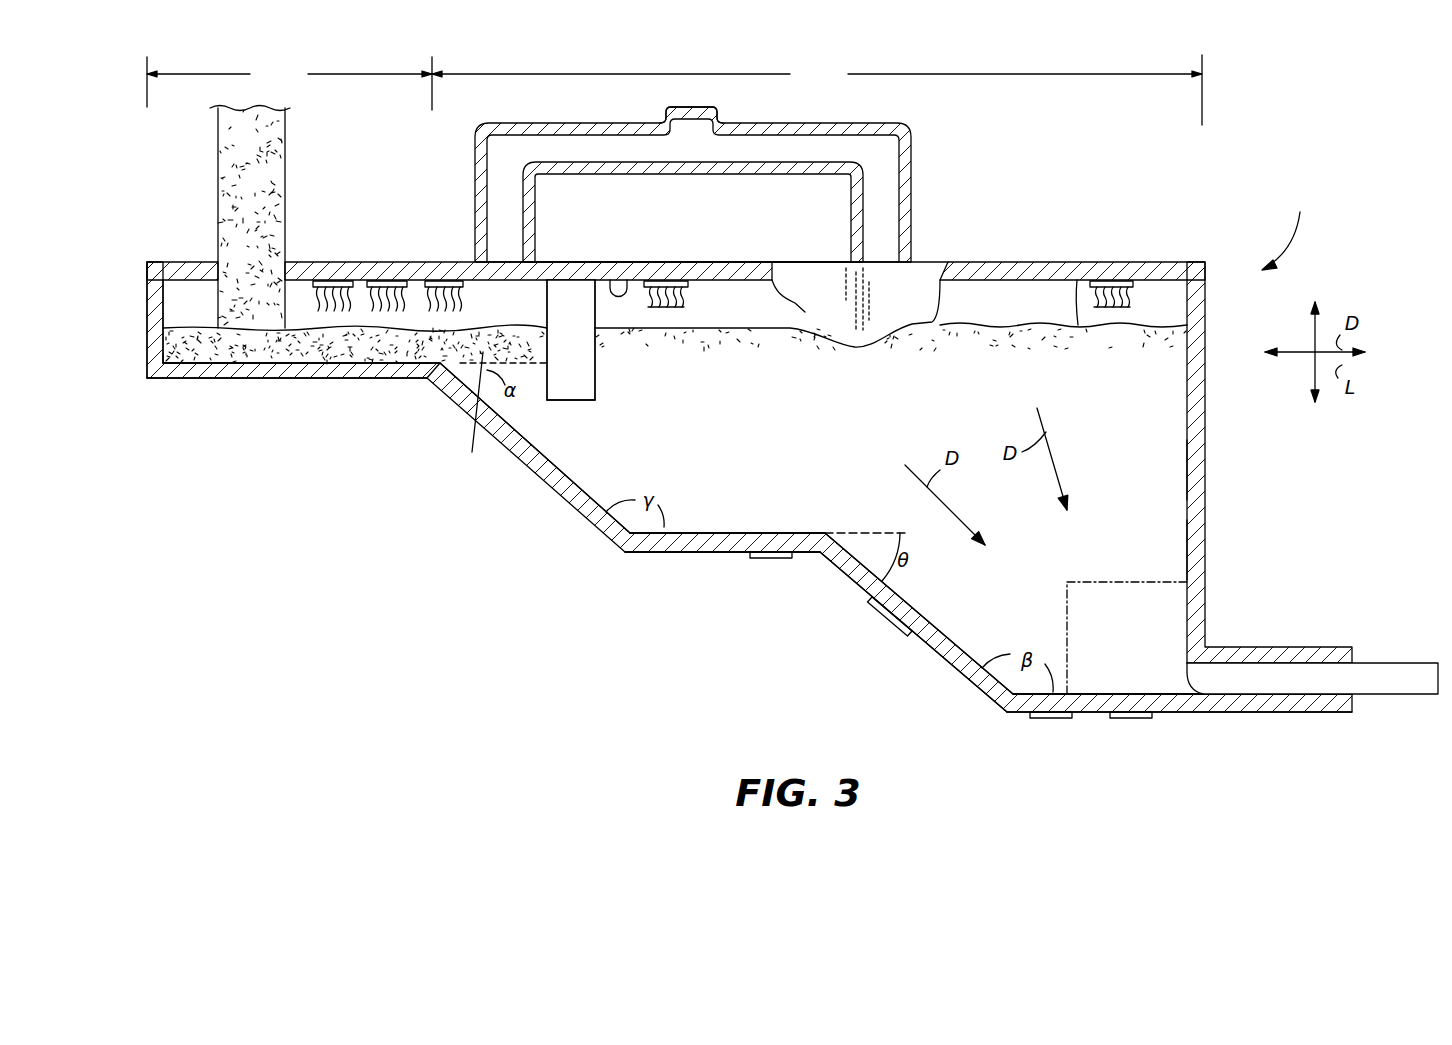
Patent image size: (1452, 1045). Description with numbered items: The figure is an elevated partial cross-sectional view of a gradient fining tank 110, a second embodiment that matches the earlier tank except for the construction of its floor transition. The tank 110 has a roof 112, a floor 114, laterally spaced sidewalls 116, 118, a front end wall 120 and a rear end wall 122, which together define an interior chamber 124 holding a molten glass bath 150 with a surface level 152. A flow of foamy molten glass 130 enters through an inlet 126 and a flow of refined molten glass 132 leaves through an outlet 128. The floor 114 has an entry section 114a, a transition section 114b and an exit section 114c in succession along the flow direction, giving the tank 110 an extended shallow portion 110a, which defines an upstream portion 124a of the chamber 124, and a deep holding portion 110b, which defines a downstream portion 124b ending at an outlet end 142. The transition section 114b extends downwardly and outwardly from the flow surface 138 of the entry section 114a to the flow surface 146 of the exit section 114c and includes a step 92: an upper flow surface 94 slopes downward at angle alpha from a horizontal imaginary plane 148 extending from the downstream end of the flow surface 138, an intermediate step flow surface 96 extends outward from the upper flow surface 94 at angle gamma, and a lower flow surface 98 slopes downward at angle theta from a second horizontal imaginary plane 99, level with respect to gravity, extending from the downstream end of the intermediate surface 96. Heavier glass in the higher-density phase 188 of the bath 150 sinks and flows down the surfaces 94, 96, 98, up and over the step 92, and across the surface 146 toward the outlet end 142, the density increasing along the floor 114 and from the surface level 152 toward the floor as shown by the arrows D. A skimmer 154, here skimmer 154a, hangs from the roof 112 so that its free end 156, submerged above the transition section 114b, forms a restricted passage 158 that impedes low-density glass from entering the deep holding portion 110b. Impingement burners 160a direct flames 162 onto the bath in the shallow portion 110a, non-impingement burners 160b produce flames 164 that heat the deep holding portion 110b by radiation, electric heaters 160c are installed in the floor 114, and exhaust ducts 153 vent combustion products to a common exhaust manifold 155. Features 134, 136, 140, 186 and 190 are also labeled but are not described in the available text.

The gradient fining tank 110 is at (1292, 227).
The extended shallow portion 110a is at (289, 83).
The deep holding portion 110b is at (817, 90).
The roof 112 is at (548, 270).
The floor 114 is at (562, 499).
The entry section 114a is at (283, 375).
The transition section 114b is at (585, 520).
The exit section 114c is at (1112, 694).
The sidewall 116 is at (893, 309).
The sidewall 118 is at (1006, 309).
The front end wall 120 is at (160, 298).
The rear end wall 122 is at (1195, 412).
The interior chamber 124 is at (1184, 472).
The upstream portion 124a is at (163, 375).
The downstream portion 124b is at (745, 295).
The inlet 126 is at (288, 262).
The outlet 128 is at (1212, 668).
The flow of foamy molten glass 130 is at (245, 180).
The flow of refined molten glass 132 is at (1408, 682).
The top wall portion 134 is at (166, 298).
The corner 136 is at (446, 400).
The bend 140 is at (405, 405).
The flow surface 138 is at (212, 368).
The outlet end 142 is at (1186, 545).
The flow surface 146 is at (1140, 690).
The horizontal imaginary plane 148 is at (514, 372).
The molten glass bath 150 is at (774, 428).
The surface level 152 is at (1078, 272).
The exhaust duct 153 is at (912, 178).
The skimmer 154 is at (572, 300).
The skimmer 154a is at (582, 350).
The exhaust manifold 155 is at (663, 118).
The free end 156 is at (585, 401).
The restricted passage 158 is at (547, 400).
The impingement burner 160a is at (425, 284).
The non-impingement burner 160b is at (1122, 284).
The electric heater 160c is at (1130, 720).
The flames 162 is at (395, 302).
The flames 164 is at (1100, 318).
The coolant layer 186 is at (493, 328).
The higher-density phase 188 is at (460, 415).
The region 190 is at (1066, 614).
The step 92 is at (735, 548).
The upper flow surface 94 is at (536, 440).
The intermediate step flow surface 96 is at (686, 533).
The lower flow surface 98 is at (945, 613).
The horizontal imaginary plane 99 is at (870, 530).